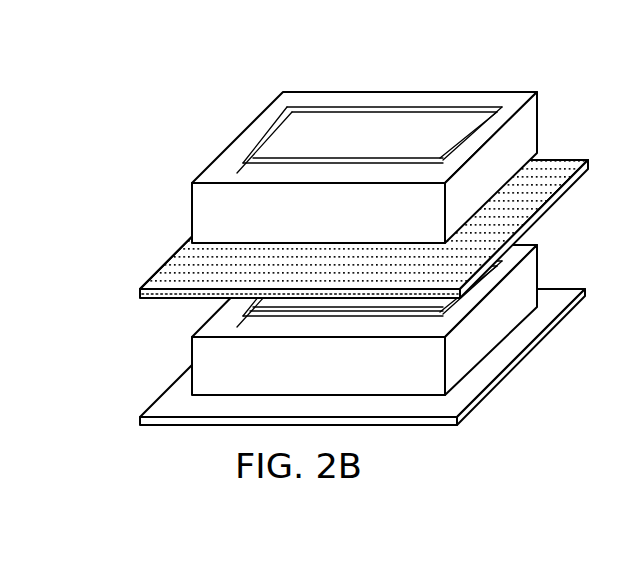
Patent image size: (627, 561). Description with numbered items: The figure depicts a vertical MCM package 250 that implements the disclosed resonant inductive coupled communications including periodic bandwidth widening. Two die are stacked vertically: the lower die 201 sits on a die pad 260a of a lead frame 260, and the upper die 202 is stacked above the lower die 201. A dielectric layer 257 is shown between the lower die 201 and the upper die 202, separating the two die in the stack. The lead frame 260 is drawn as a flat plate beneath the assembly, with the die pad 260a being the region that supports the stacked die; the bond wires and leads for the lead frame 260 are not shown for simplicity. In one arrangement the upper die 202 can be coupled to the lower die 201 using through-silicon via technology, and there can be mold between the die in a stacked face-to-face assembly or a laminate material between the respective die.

The vertical MCM package 250 is at (367, 264).
The Die 2 202 is at (263, 136).
The dielectric layer 257 is at (541, 206).
The Die 1 201 is at (393, 314).
The die pad 260a is at (492, 368).
The lead frame 260 is at (527, 402).